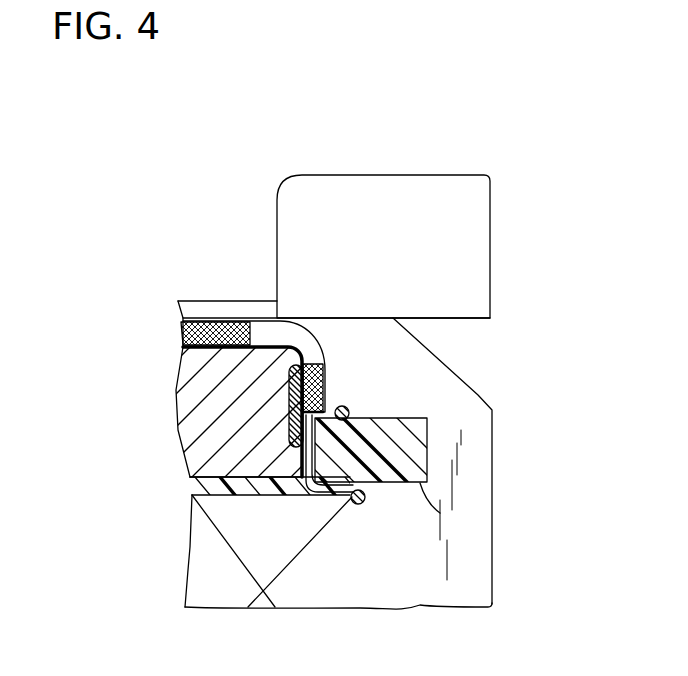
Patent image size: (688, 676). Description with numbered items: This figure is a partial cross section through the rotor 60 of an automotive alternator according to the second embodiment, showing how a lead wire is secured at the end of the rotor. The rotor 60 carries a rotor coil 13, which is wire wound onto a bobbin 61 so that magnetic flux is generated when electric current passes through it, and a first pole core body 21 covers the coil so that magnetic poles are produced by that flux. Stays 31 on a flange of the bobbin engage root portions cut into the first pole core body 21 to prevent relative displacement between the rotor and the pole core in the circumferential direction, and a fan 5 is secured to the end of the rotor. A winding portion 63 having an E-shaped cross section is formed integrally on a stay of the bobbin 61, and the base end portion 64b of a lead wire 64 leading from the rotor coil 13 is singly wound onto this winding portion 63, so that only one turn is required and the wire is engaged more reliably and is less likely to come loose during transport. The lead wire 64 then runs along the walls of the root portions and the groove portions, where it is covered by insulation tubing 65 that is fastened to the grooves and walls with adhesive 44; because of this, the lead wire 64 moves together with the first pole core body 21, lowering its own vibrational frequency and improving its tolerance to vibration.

The fan 5 is at (377, 207).
The rotor 60 is at (227, 257).
The insulation tubing 65 is at (247, 335).
The adhesive 44 is at (287, 397).
The first pole core body 21 is at (215, 447).
The bobbin 61 is at (230, 485).
The rotor coil 13 is at (283, 597).
The stay 31 is at (333, 404).
The base end portion 64b is at (348, 407).
The lead wire 64 is at (397, 418).
The winding portion 63 is at (440, 513).